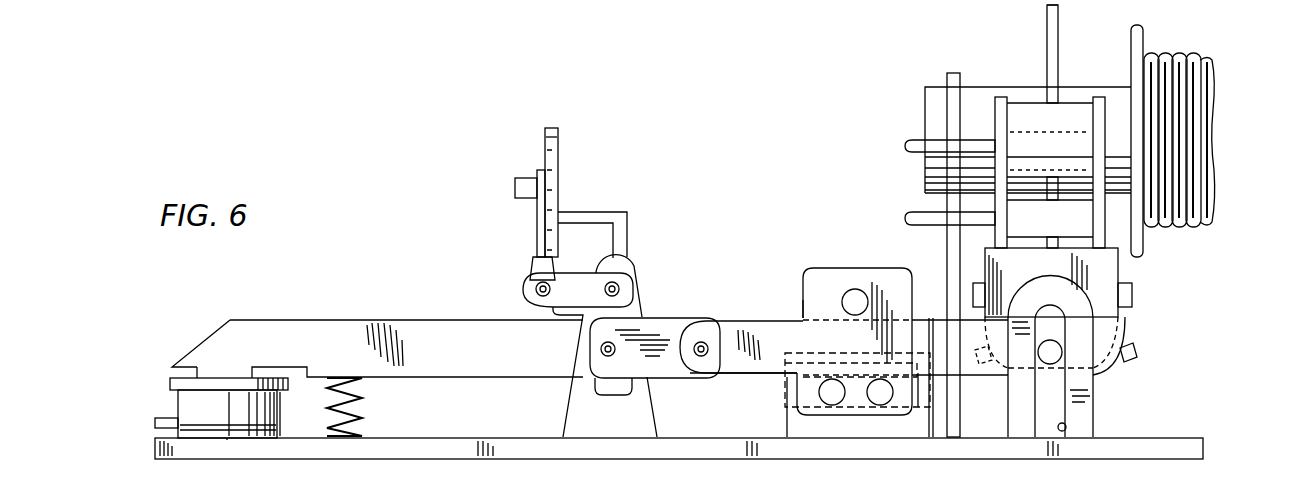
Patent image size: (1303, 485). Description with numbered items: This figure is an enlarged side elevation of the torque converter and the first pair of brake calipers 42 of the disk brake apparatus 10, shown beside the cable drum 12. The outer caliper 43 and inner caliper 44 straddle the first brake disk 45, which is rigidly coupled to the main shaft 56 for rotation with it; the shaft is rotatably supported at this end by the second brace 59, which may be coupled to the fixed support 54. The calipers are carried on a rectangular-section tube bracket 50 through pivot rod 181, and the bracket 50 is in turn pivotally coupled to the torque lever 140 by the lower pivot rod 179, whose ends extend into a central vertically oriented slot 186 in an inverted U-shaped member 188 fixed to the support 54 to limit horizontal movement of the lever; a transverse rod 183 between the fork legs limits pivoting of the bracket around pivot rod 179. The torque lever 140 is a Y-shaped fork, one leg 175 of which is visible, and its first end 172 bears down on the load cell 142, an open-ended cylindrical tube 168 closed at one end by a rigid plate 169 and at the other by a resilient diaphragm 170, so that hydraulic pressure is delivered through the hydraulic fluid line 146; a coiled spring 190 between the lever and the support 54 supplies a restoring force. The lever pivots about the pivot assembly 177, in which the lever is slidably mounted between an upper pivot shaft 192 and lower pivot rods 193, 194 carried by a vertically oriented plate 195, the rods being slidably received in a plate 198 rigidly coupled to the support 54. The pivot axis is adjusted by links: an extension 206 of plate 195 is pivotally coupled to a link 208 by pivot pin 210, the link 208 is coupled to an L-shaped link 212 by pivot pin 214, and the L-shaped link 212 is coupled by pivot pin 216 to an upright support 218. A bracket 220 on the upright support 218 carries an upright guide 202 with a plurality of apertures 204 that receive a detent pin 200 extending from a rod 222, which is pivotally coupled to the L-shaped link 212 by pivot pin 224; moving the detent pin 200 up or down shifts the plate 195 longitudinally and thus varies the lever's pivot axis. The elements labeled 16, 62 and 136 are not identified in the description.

The disk brake apparatus 10 is at (860, 122).
The cable drum 12 is at (1212, 43).
The coil spring 16 is at (1218, 97).
The first pair of brake calipers 42 is at (1032, 67).
The outer caliper 43 is at (997, 110).
The inner caliper 44 is at (1100, 97).
The first brake disk 45 is at (1062, 25).
The bracket 50 is at (1120, 268).
The fixed support 54 is at (1208, 442).
The main shaft 56 is at (977, 85).
The second brace 59 is at (948, 73).
The post 62 is at (1142, 25).
The actuator assembly 136 is at (422, 178).
The torque lever 140 is at (403, 317).
The load cell 142 is at (153, 397).
The hydraulic fluid line 146 is at (157, 417).
The open-ended cylindrical tube 168 is at (280, 418).
The rigid plate 169 is at (227, 440).
The resilient diaphragm 170 is at (213, 378).
The first end of torque lever 172 is at (215, 332).
The leg of torque lever 175 is at (773, 318).
The pivot assembly 177 is at (835, 262).
The pivot rod 179 is at (1052, 357).
The pivot rod 181 is at (1132, 295).
The transverse rod 183 is at (1137, 353).
The vertically-oriented slot 186 is at (1066, 430).
The inverted U-shaped member 188 is at (1093, 422).
The coiled spring 190 is at (362, 403).
The upper pivot shaft 192 is at (852, 290).
The lower pivot rod 193 is at (832, 405).
The lower pivot rod 194 is at (880, 405).
The vertically oriented plate 195 is at (805, 267).
The plate 198 is at (785, 413).
The detent pin 200 is at (560, 187).
The upright guide 202 is at (558, 130).
The apertures 204 is at (558, 137).
The extension 206 is at (730, 375).
The link 208 is at (650, 320).
The pivot pin 210 is at (702, 345).
The L-shaped link 212 is at (553, 322).
The pivot pin 214 is at (607, 357).
The pivot pin 216 is at (618, 287).
The upright support 218 is at (628, 260).
The bracket 220 is at (610, 212).
The rod 222 is at (540, 237).
The pivot pin 224 is at (533, 290).